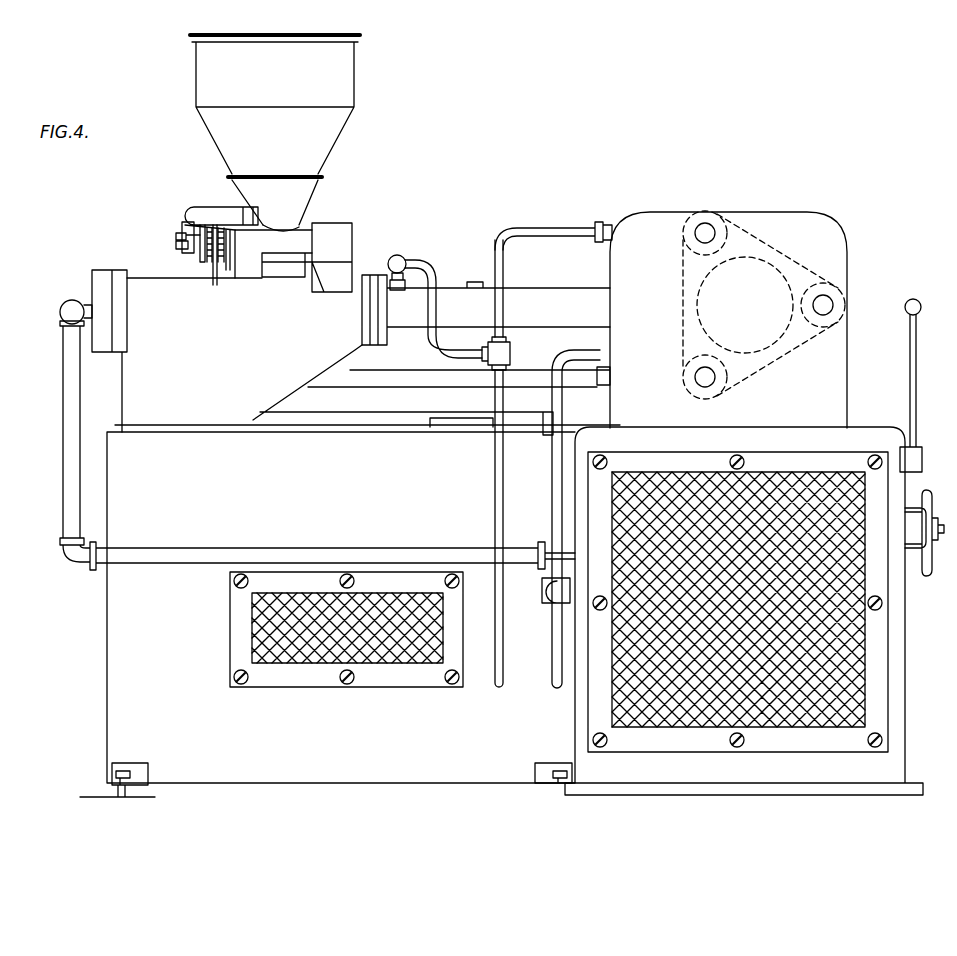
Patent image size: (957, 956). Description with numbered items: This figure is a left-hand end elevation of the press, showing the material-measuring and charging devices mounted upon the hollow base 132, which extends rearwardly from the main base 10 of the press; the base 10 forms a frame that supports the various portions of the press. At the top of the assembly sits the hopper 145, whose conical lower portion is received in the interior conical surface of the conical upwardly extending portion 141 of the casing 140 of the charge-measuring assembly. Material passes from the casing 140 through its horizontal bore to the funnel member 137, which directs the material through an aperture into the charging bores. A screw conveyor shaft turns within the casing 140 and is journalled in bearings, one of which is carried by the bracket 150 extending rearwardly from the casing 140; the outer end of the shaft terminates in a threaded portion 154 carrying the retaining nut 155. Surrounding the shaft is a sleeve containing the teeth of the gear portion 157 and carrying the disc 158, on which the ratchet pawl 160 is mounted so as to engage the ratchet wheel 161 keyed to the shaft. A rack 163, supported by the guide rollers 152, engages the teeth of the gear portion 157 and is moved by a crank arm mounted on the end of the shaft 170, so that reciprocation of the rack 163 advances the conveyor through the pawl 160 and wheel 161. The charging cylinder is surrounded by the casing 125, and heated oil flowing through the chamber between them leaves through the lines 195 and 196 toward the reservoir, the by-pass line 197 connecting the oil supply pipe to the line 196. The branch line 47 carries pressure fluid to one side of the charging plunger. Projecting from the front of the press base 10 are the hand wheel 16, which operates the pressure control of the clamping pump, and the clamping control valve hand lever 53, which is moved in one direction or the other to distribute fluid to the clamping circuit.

The base 10 is at (858, 437).
The hand wheel 16 is at (930, 576).
The branch line 47 is at (62, 449).
The clamping control valve hand lever 53 is at (910, 350).
The casing 125 is at (570, 296).
The hollow base 132 is at (108, 655).
The funnel member 137 is at (340, 228).
The casing 140 is at (250, 250).
The conical upwardly extending portion 141 is at (316, 196).
The hopper 145 is at (340, 99).
The bracket 150 is at (216, 206).
The guide rollers 152 is at (215, 272).
The threaded portion 154 is at (176, 235).
The retaining nut 155 is at (176, 246).
The gear portion 157 is at (234, 203).
The disc 158 is at (205, 211).
The ratchet pawl 160 is at (200, 222).
The ratchet wheel 161 is at (208, 256).
The rack 163 is at (216, 278).
The shaft 170 is at (428, 374).
The line 195 is at (432, 262).
The line 196 is at (495, 508).
The by-pass line 197 is at (570, 232).